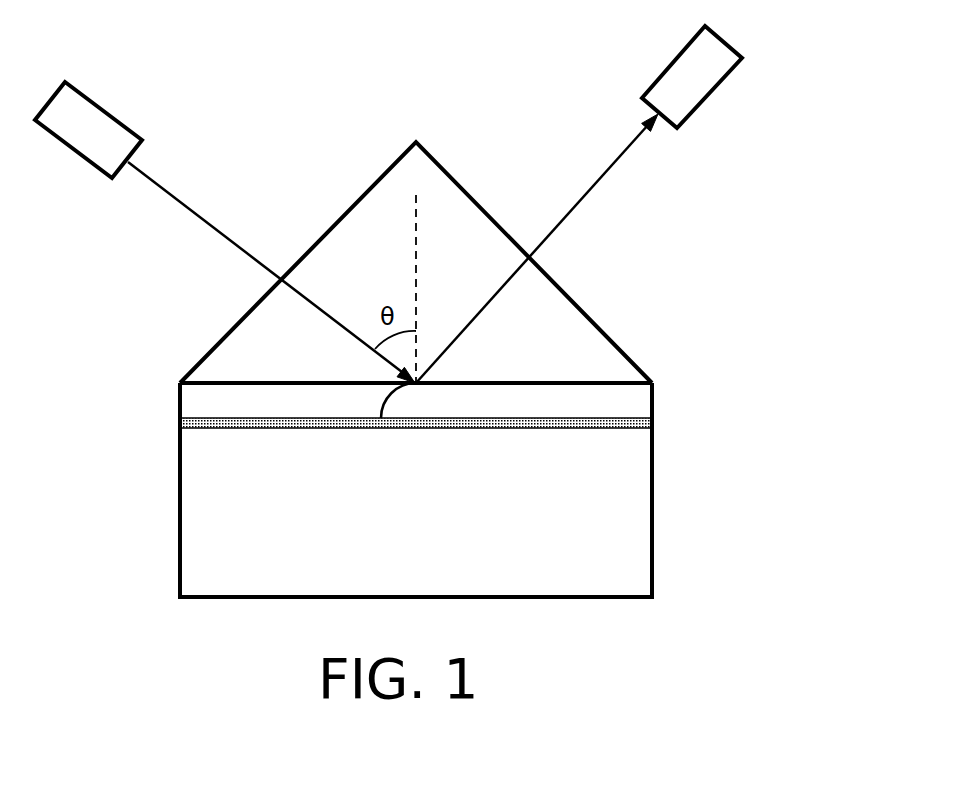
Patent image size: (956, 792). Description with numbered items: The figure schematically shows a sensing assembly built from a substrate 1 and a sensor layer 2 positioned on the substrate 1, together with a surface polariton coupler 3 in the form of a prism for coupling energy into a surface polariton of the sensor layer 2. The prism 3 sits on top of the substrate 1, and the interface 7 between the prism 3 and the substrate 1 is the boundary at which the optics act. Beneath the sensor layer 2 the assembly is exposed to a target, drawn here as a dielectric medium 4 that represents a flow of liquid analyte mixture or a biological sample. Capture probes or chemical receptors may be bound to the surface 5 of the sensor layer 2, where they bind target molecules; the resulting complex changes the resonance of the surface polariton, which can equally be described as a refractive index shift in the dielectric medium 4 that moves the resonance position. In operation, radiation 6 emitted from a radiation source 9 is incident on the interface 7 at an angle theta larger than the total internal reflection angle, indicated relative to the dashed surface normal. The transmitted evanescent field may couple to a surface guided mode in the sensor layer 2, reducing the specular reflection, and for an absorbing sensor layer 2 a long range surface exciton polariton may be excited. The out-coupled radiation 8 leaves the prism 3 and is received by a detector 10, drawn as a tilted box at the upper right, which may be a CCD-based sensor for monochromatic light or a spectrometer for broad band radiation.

The substrate 1 is at (652, 398).
The sensor layer 2 is at (652, 428).
The surface polariton coupler 3 is at (595, 320).
The dielectric medium 4 is at (652, 485).
The surface of the sensor layer 5 is at (268, 428).
The radiation 6 is at (203, 215).
The interface 7 is at (282, 383).
The out-coupled radiation 8 is at (595, 180).
The radiation source 9 is at (105, 108).
The detector 10 is at (673, 58).